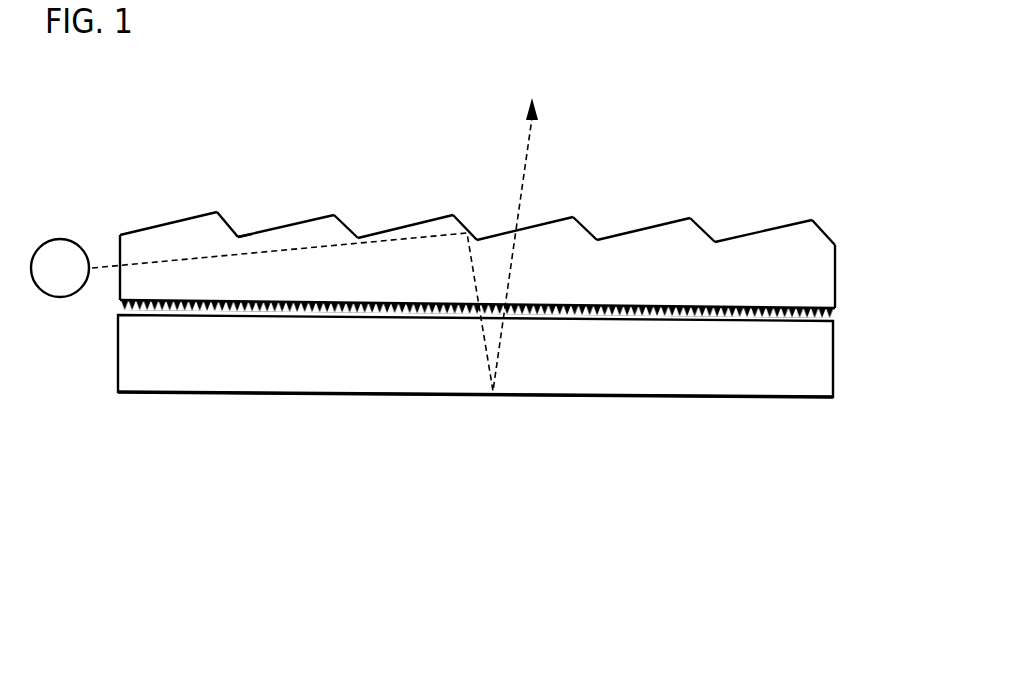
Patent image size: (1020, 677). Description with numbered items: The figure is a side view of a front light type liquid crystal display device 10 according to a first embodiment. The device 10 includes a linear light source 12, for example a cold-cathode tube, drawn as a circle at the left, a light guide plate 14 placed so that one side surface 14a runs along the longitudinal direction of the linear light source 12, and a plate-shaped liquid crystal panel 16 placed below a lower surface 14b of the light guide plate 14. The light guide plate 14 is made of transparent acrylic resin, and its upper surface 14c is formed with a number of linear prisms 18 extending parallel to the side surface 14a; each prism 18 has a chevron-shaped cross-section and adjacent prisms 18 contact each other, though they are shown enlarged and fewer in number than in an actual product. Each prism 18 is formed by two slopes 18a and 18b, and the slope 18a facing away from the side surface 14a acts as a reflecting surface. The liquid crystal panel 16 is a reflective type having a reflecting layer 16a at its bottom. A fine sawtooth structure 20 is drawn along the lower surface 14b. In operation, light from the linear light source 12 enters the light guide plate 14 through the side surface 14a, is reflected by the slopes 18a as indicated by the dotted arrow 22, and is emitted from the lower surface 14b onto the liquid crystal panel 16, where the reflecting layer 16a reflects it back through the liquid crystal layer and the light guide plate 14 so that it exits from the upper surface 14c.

The liquid crystal display device 10 is at (465, 96).
The linear light source 12 is at (59, 245).
The light guide plate 14 is at (474, 235).
The side surface 14a is at (118, 283).
The lower surface 14b is at (810, 305).
The upper surface 14c is at (254, 207).
The liquid crystal panel 16 is at (509, 369).
The reflecting layer 16a is at (812, 398).
The prism 18 is at (477, 193).
The slope 18a is at (348, 222).
The slope 18b is at (300, 222).
The fine prism rows 20 is at (120, 306).
The dotted arrow 22 is at (535, 128).